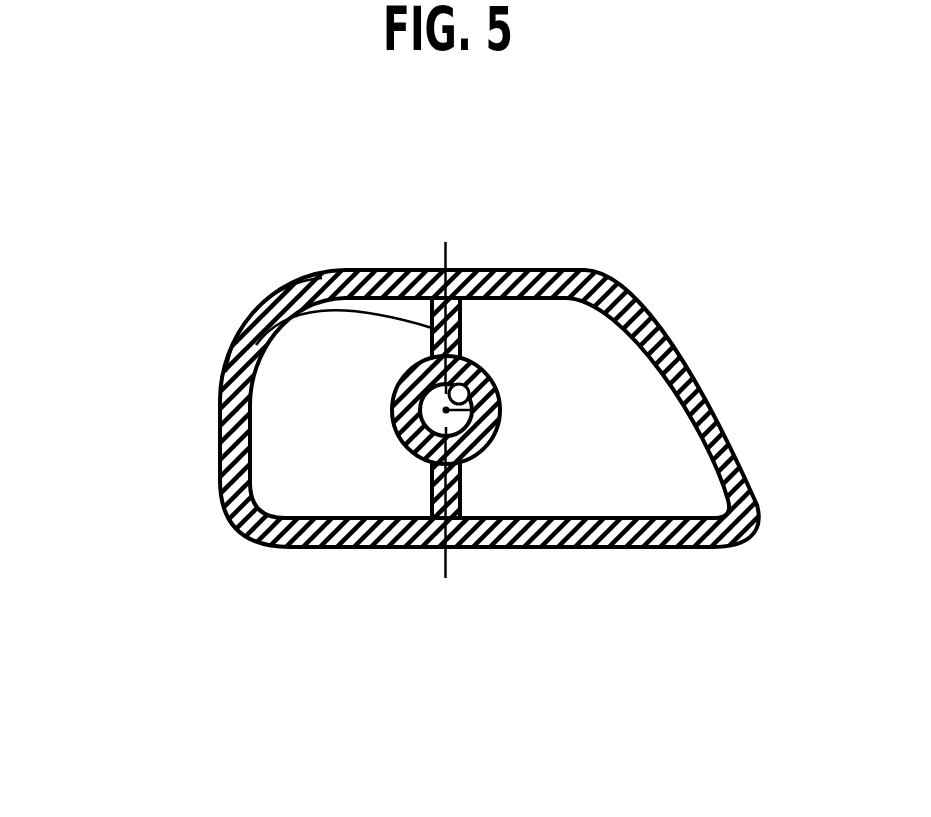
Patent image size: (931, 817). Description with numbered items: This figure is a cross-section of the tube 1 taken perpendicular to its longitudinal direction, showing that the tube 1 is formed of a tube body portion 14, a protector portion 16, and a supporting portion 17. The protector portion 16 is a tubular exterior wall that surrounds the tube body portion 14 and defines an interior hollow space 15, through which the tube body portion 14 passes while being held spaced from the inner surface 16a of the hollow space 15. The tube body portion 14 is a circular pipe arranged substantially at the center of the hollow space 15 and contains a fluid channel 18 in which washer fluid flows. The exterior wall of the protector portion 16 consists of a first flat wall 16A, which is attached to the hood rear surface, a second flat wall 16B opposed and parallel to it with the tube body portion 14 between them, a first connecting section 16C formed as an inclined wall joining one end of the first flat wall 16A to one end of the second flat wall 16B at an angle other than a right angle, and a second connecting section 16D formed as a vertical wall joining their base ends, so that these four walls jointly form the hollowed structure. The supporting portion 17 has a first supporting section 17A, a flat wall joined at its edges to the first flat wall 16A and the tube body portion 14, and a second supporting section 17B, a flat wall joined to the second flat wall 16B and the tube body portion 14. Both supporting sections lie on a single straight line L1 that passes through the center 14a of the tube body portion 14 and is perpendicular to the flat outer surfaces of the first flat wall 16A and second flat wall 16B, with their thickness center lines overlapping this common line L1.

The tube 1 is at (642, 284).
The tube body portion 14 is at (394, 403).
The center 14a is at (467, 403).
The interior hollow space 15 is at (527, 487).
The protector portion 16 is at (320, 282).
The first flat wall 16A is at (624, 537).
The second flat wall 16B is at (546, 286).
The first connecting section 16C is at (690, 397).
The second connecting section 16D is at (227, 367).
The inner surface 16a is at (353, 518).
The supporting portion 17 is at (108, 402).
The first supporting section 17A is at (433, 487).
The second supporting section 17B is at (432, 329).
The fluid channel 18 is at (466, 383).
The straight line L1 is at (445, 578).